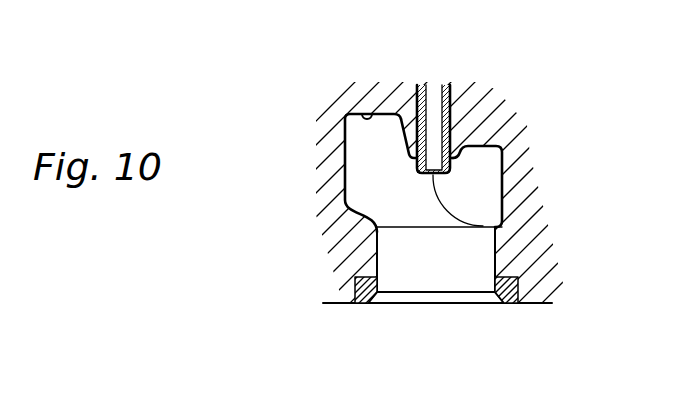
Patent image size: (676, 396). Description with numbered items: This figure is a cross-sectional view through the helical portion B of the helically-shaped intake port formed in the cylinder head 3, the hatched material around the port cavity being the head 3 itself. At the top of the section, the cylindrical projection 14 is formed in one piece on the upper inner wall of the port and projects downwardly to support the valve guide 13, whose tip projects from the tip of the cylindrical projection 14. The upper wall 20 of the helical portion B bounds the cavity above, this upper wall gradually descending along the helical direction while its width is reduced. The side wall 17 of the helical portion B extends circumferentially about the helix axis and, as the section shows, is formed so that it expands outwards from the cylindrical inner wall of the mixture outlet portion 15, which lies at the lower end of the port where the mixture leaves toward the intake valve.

The cylinder head 3 is at (333, 103).
The valve guide 13 is at (451, 113).
The cylindrical projection 14 is at (408, 142).
The mixture outlet portion 15 is at (493, 258).
The side wall of the helical portion 17 is at (346, 160).
The upper wall of the helical portion 20 is at (367, 113).
The helical portion B is at (511, 140).